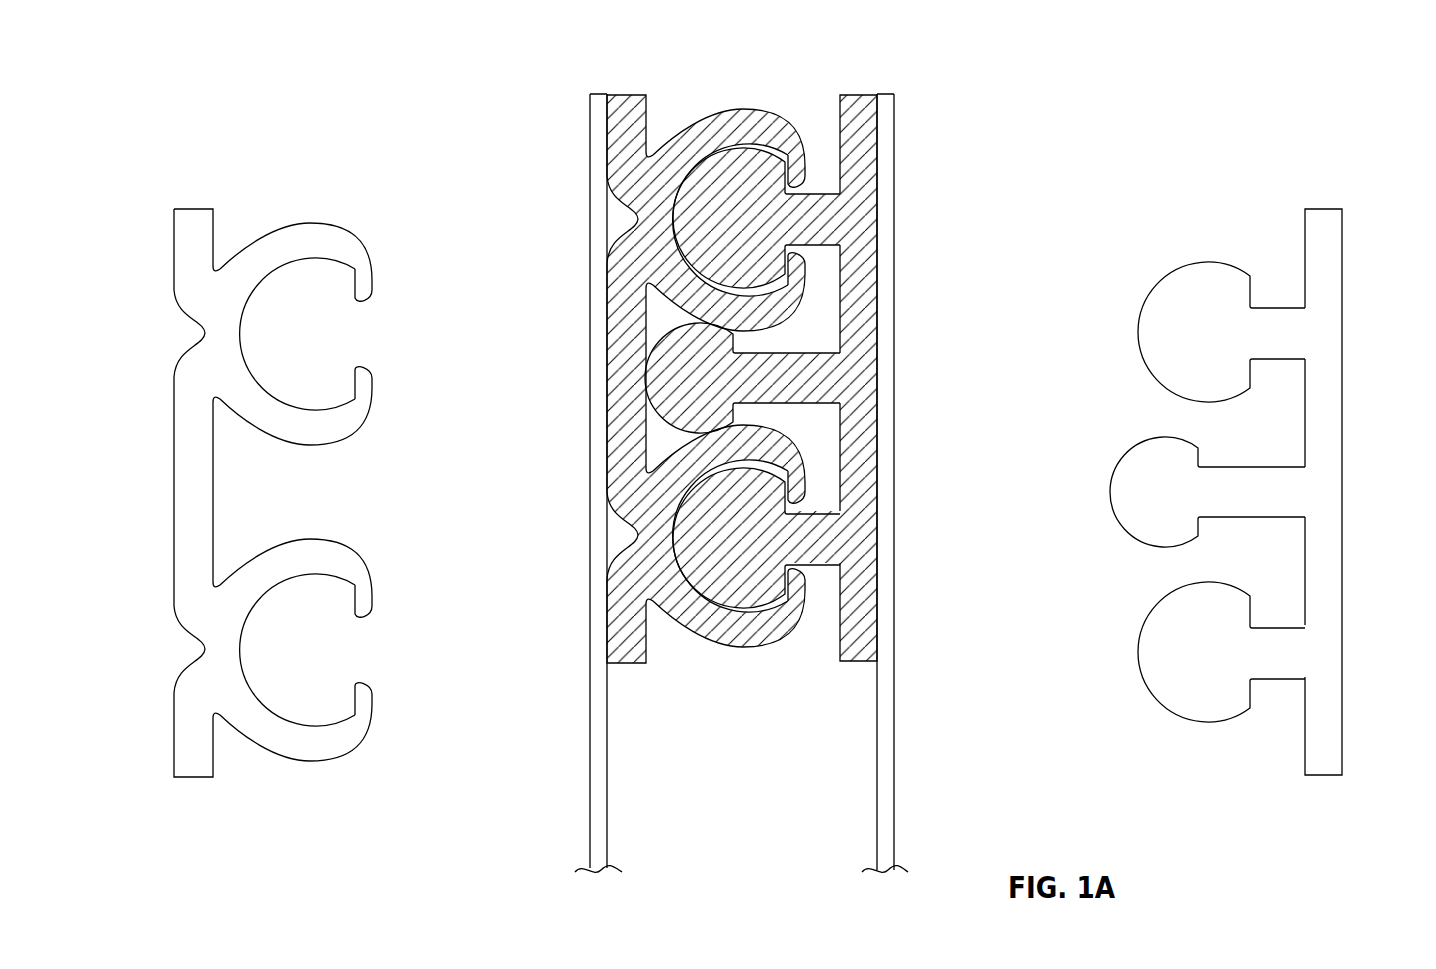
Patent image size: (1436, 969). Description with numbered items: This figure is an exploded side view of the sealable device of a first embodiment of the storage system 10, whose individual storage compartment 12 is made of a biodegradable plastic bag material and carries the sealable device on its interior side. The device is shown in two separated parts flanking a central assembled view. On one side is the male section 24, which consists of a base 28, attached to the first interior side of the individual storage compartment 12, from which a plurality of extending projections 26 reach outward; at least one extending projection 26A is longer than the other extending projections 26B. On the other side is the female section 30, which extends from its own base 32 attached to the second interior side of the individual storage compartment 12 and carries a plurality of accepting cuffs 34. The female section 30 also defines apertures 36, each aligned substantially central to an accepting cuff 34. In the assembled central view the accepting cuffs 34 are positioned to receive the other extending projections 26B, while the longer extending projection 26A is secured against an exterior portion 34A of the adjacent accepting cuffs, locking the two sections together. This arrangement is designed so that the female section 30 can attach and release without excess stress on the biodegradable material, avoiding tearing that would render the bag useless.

The storage system 10 is at (920, 130).
The individual storage compartment 12 is at (763, 765).
The male section 24 is at (964, 414).
The extending projection 26 is at (912, 439).
The longer extending projection 26A is at (1140, 438).
The extending projections 26B is at (1153, 283).
The base 28 is at (853, 473).
The female section 30 is at (451, 415).
The base 32 is at (617, 615).
The accepting cuff 34 is at (512, 407).
The exterior portion 34A is at (295, 447).
The aperture 36 is at (184, 334).